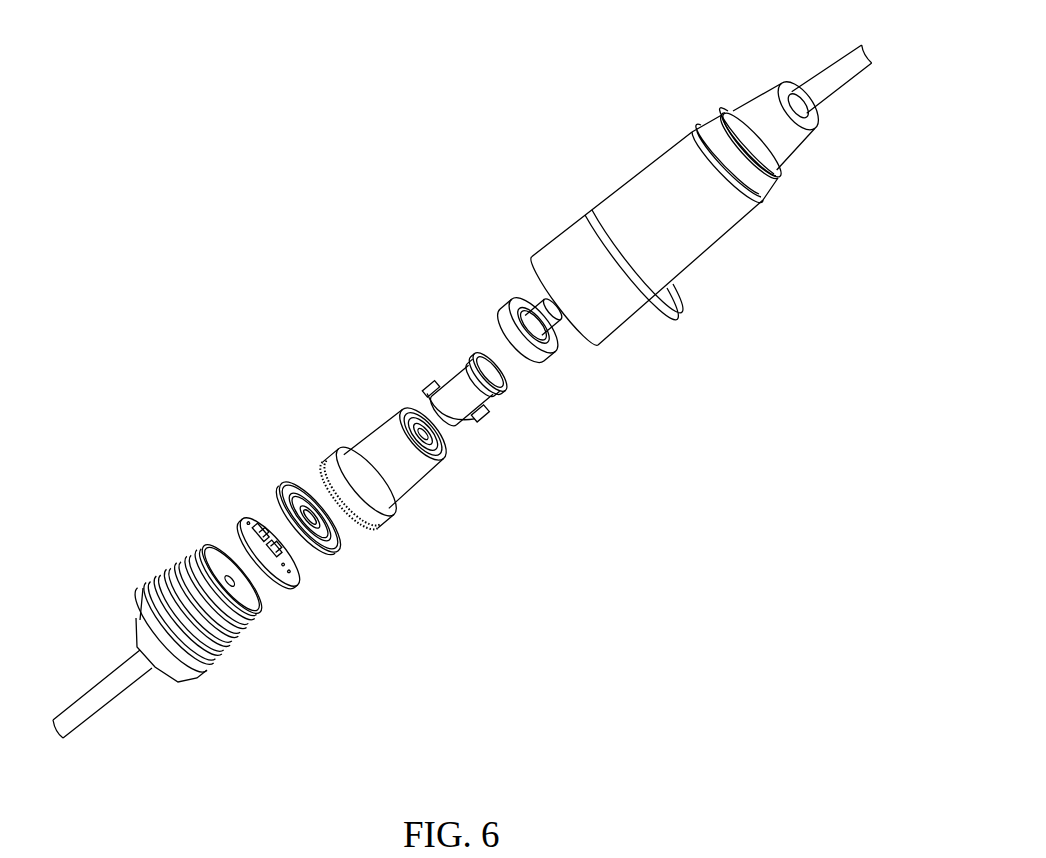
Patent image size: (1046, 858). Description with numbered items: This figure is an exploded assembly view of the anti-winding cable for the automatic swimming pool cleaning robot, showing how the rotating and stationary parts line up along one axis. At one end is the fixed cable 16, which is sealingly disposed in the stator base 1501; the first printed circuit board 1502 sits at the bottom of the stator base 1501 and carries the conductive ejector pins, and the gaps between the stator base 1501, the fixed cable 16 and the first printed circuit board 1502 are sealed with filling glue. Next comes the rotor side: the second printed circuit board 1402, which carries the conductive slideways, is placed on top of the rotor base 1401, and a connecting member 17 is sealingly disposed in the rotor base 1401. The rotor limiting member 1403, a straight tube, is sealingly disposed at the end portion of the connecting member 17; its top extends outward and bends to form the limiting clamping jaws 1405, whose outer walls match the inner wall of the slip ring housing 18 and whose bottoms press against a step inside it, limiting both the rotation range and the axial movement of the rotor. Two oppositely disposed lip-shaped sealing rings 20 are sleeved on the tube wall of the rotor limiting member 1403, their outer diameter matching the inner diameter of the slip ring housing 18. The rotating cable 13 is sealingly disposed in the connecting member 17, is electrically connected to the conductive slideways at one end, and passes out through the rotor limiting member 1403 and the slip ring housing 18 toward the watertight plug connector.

The rotating cable 13 is at (833, 73).
The fixed cable 16 is at (112, 685).
The connecting member 17 is at (390, 447).
The slip ring housing 18 is at (657, 190).
The lip-shaped sealing ring 20 is at (508, 308).
The rotor base 1401 is at (340, 470).
The second printed circuit board 1402 is at (282, 477).
The rotor limiting member 1403 is at (472, 373).
The limiting clamping jaw 1405 is at (473, 425).
The stator base 1501 is at (198, 557).
The first printed circuit board 1502 is at (293, 572).